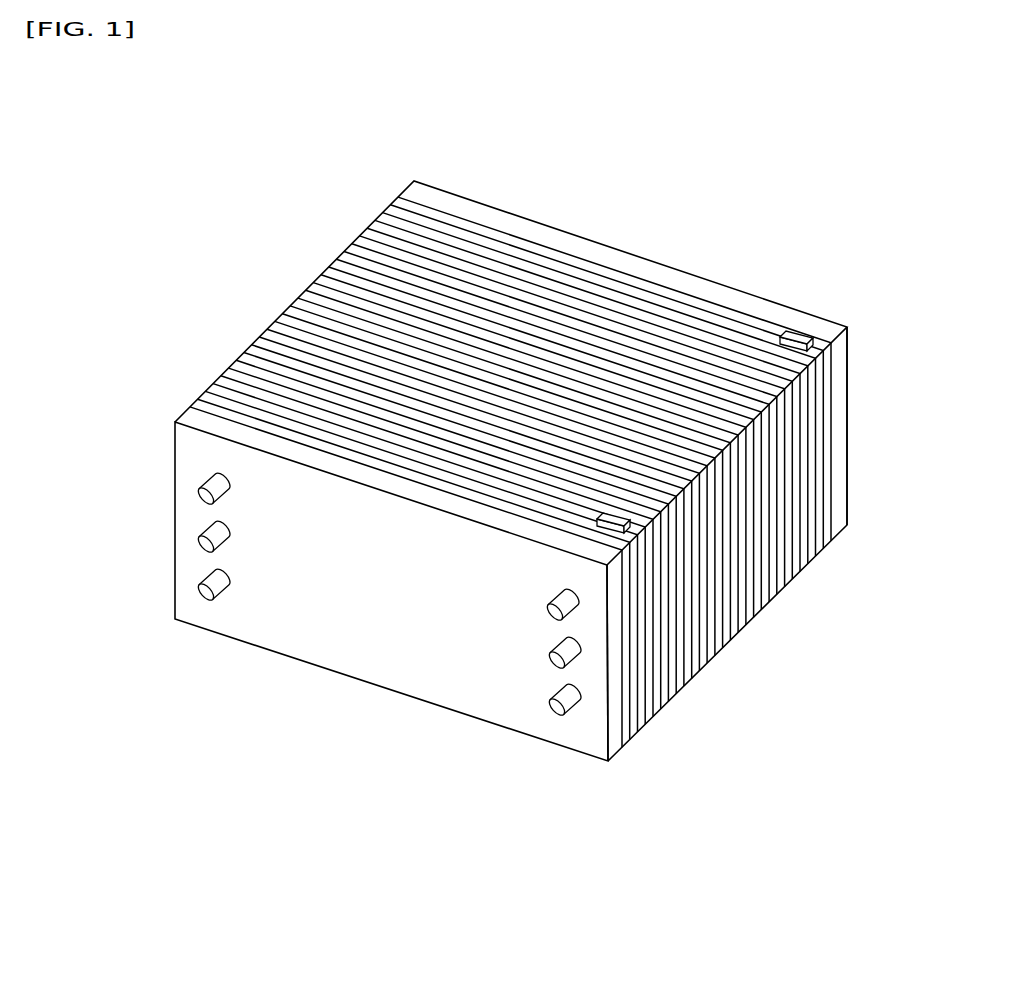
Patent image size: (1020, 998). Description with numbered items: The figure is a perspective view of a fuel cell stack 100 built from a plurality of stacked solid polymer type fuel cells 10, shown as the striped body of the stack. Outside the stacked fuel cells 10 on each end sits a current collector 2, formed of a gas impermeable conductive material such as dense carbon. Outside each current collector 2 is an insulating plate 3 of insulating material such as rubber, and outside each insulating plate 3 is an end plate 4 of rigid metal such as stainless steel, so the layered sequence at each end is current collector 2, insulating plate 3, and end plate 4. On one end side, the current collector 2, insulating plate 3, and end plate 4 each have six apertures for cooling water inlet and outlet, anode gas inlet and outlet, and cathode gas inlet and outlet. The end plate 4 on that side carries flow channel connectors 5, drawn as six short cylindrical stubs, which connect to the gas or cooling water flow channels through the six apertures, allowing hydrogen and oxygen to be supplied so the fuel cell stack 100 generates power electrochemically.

The fuel cell stack 100 is at (469, 487).
The fuel cell 10 is at (723, 645).
The current collector 2 is at (638, 738).
The insulating plate 3 is at (624, 752).
The end plate 4 is at (610, 765).
The flow channel connector 5 is at (200, 491).